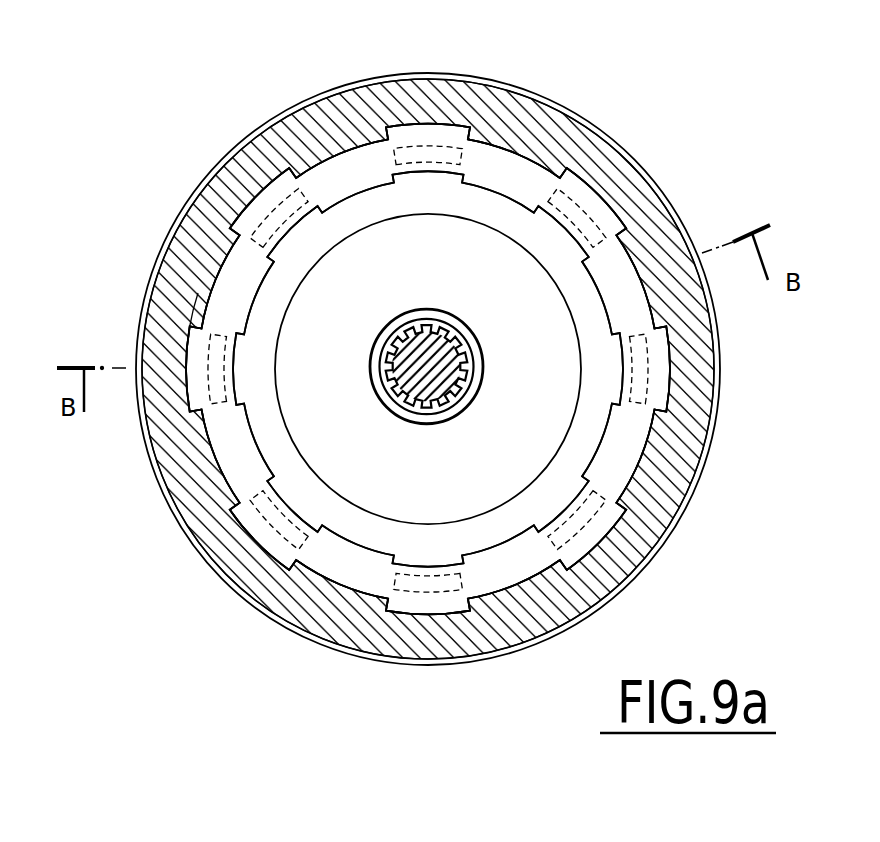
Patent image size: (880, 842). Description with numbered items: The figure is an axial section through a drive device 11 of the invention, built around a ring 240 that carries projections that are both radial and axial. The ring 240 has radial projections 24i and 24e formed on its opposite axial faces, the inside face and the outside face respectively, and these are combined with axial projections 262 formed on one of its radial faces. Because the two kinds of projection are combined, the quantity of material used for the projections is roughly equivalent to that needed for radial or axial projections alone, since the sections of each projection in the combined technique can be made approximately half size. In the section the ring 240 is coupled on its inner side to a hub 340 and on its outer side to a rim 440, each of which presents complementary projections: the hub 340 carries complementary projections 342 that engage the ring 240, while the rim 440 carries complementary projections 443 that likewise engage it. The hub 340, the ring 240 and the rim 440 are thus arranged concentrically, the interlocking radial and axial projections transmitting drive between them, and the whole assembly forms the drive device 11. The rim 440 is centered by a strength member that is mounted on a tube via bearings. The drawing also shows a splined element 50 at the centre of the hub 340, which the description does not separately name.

The drive device 11 is at (147, 139).
The radial projection on the outside face 24e is at (428, 327).
The radial projection on the inside face 24i is at (428, 368).
The complementary projection of the hub 342 is at (308, 142).
The axial projection 262 is at (428, 309).
The rim 440 is at (428, 343).
The complementary projection of the rim 443 is at (129, 260).
The ring 240 is at (433, 337).
The hub 340 is at (428, 369).
The splined hub 50 is at (458, 366).